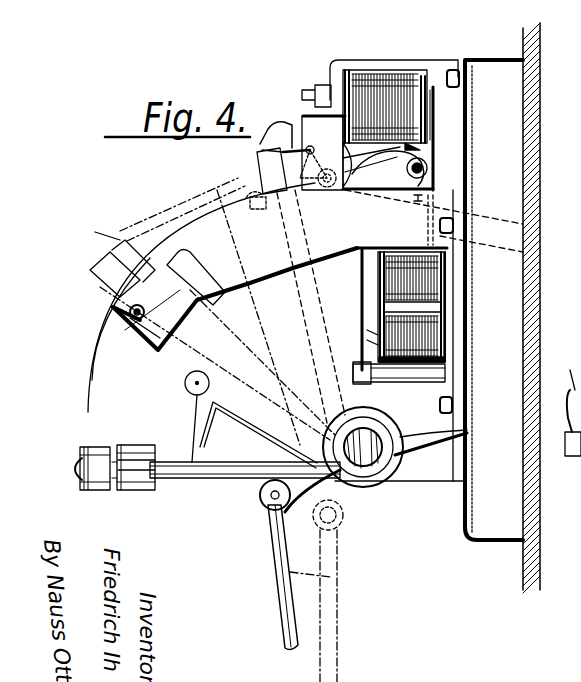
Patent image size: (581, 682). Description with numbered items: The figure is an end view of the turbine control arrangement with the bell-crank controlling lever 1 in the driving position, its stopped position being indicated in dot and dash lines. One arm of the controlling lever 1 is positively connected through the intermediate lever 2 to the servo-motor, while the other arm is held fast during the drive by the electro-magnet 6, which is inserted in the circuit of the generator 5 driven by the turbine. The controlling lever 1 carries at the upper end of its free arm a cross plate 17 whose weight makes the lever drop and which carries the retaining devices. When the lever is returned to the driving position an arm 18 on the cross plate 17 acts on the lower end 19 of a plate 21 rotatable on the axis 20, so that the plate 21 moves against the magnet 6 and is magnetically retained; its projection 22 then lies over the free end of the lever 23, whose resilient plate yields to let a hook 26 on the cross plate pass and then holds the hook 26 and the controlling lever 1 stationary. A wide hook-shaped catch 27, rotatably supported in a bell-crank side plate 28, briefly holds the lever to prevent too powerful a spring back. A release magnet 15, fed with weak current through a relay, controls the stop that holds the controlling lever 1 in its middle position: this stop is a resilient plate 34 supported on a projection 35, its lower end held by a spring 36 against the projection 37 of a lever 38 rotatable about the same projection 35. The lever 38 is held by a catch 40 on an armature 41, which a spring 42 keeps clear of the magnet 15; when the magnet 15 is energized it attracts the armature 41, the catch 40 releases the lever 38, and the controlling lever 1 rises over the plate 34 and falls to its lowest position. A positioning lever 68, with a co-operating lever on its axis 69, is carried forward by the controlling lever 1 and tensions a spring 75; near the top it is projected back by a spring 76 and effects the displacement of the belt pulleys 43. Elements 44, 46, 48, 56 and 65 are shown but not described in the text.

The bell-crank controlling lever 1 is at (188, 214).
The intermediate lever 2 is at (285, 574).
The generator 5 is at (575, 376).
The electro-magnet 6 is at (359, 71).
The release magnet 15 is at (447, 297).
The cross plate 17 is at (272, 171).
The arm 18 is at (530, 223).
The lower end of plate 19 is at (525, 253).
The axis 20 is at (424, 172).
The plate 21 is at (433, 112).
The projection 22 is at (432, 143).
The lever 23 is at (373, 163).
The hook 26 is at (282, 122).
The hook-shaped catch 27 is at (263, 140).
The side plate 28 is at (97, 405).
The plate 34 is at (117, 302).
The projection 35 is at (120, 312).
The spring 36 is at (137, 312).
The projection of lever 37 is at (133, 320).
The lever 38 is at (157, 267).
The catch 40 is at (443, 260).
The armature 41 is at (450, 315).
The spring 42 is at (447, 347).
The belt pulleys 43 is at (77, 480).
The bolt 44 is at (80, 455).
The nut 46 is at (140, 470).
The block 48 is at (154, 256).
The rod 56 is at (192, 480).
The housing wall 65 is at (514, 156).
The positioning lever 68 is at (248, 463).
The axis 69 is at (330, 485).
The spring 75 is at (467, 430).
The spring 76 is at (243, 206).